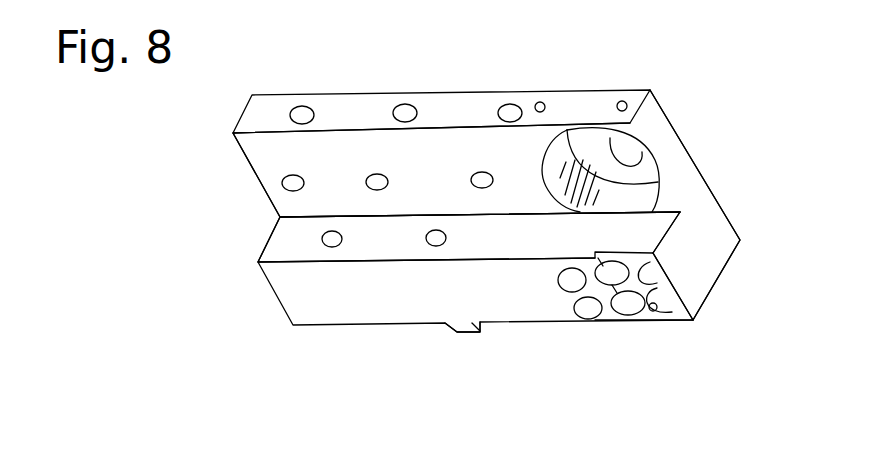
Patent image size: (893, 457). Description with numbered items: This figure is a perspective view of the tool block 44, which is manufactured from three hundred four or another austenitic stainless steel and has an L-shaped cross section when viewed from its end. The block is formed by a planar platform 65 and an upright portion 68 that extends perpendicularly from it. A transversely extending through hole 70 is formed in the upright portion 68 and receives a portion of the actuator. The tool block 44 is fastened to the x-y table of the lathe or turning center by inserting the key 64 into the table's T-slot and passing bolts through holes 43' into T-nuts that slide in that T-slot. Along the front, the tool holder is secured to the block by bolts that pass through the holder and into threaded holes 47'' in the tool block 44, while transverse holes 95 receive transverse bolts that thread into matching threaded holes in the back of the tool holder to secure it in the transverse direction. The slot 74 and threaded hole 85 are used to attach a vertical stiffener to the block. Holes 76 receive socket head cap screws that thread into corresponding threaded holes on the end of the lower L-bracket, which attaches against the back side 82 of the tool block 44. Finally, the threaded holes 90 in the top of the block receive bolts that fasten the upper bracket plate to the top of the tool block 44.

The tool block 44 is at (722, 210).
The upright portion 68 is at (433, 162).
The back side 82 is at (700, 172).
The holes 43' is at (444, 64).
The threaded holes 90 is at (624, 102).
The through hole 70 is at (640, 158).
The transverse holes 95 is at (472, 184).
The planar platform 65 is at (480, 240).
The threaded holes 47'' is at (313, 286).
The key 64 is at (457, 332).
The holes 76 is at (578, 312).
The slot 74 is at (640, 320).
The threaded hole 85 is at (668, 318).